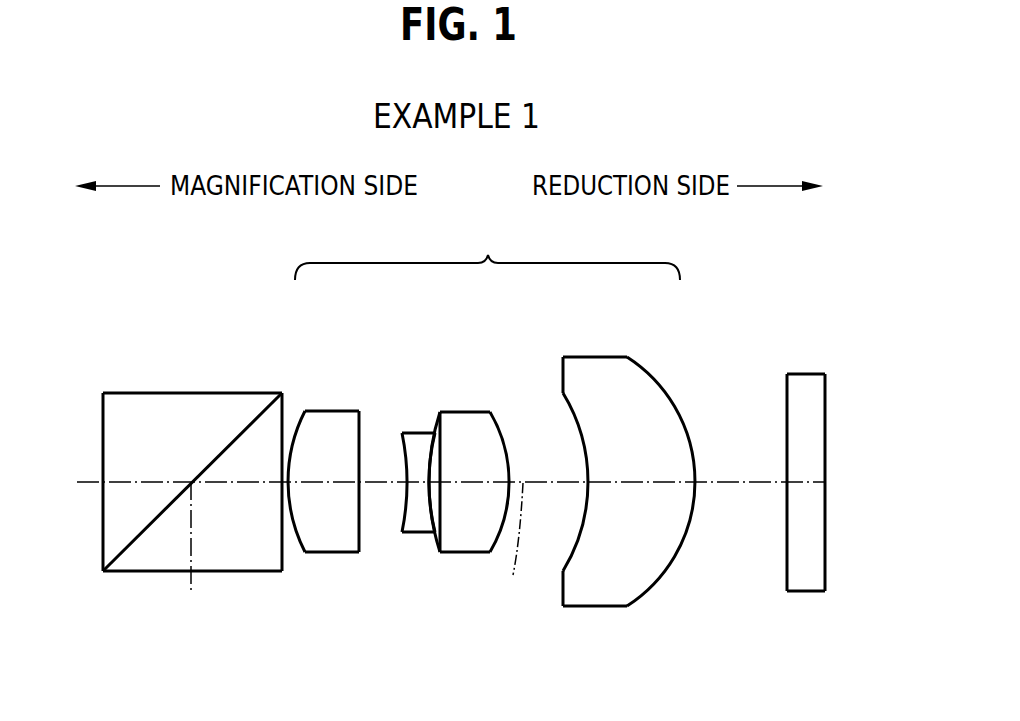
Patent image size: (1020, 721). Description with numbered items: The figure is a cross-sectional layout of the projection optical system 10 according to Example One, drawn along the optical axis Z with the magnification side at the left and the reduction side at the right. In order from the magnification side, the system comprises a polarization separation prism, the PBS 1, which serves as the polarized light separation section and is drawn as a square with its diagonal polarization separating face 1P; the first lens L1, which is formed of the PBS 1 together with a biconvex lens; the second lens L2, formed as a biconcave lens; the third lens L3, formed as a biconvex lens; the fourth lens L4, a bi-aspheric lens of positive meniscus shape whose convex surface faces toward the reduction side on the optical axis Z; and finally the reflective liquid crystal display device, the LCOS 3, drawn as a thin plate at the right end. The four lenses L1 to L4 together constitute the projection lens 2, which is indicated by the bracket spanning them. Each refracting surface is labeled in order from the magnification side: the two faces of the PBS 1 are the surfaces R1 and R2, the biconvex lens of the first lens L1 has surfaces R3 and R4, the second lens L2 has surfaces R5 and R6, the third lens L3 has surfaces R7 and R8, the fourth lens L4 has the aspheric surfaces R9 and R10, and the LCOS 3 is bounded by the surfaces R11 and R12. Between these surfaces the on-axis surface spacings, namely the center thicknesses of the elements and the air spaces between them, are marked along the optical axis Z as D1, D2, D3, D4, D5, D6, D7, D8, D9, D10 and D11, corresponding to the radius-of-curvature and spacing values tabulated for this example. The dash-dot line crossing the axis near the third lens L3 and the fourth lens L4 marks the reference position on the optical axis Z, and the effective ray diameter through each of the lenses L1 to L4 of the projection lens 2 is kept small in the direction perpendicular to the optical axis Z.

The projection optical system 10 is at (172, 266).
The polarization separation prism 1 is at (153, 393).
The polarization splitting surface 1P is at (225, 445).
The projection lens 2 is at (487, 250).
The reflective liquid crystal display device 3 is at (810, 375).
The first lens L1 is at (330, 411).
The second lens L2 is at (403, 433).
The third lens L3 is at (470, 412).
The fourth lens L4 is at (614, 363).
The optical axis Z is at (513, 548).
The surface 1 R1 is at (101, 412).
The surface 2 R2 is at (282, 394).
The surface 3 R3 is at (300, 411).
The surface 4 R4 is at (360, 411).
The surface 5 R5 is at (403, 438).
The surface 6 R6 is at (431, 450).
The surface 7 R7 is at (437, 418).
The surface 8 R8 is at (503, 430).
The surface 9 R9 is at (585, 478).
The surface 10 R10 is at (697, 478).
The surface 11 R11 is at (786, 428).
The surface 12 R12 is at (827, 426).
The surface spacing 1 D1 is at (118, 488).
The surface spacing 2 D2 is at (287, 488).
The surface spacing 3 D3 is at (345, 487).
The surface spacing 4 D4 is at (391, 487).
The surface spacing 5 D5 is at (415, 488).
The surface spacing 6 D6 is at (430, 488).
The surface spacing 7 D7 is at (495, 488).
The surface spacing 8 D8 is at (575, 487).
The surface spacing 9 D9 is at (670, 487).
The surface spacing 10 D10 is at (762, 488).
The surface spacing 11 D11 is at (812, 486).